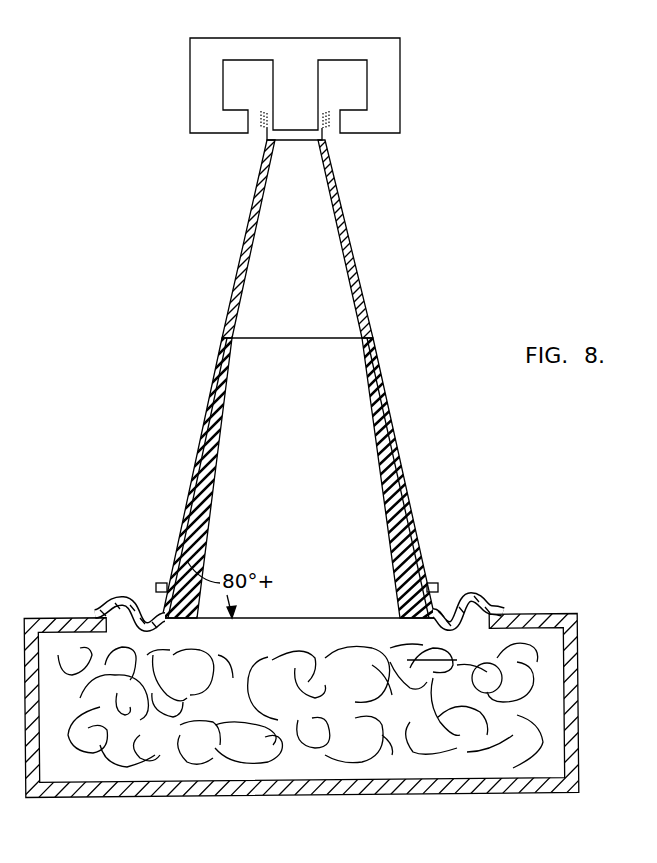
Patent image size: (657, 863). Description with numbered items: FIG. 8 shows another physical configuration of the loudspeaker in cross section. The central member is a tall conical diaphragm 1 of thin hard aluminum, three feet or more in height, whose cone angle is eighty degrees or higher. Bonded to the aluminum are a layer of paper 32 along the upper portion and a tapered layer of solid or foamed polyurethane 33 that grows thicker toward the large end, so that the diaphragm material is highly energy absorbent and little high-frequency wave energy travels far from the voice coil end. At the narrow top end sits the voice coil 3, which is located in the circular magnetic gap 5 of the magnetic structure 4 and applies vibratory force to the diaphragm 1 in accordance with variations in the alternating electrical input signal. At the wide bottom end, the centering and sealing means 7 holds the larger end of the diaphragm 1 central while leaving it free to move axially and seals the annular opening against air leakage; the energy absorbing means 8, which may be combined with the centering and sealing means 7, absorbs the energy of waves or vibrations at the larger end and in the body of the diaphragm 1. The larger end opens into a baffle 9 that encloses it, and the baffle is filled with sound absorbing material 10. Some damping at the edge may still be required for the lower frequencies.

The diaphragm 1 is at (298, 379).
The voice coil 3 is at (328, 132).
The magnetic structure 4 is at (387, 93).
The circular magnetic gap 5 is at (335, 115).
The centering and sealing means 7 is at (475, 598).
The energy absorbing means 8 is at (435, 590).
The baffle 9 is at (573, 705).
The sound absorbing material 10 is at (397, 720).
The layer of paper 32 is at (347, 258).
The tapered layer of polyurethane 33 is at (385, 465).